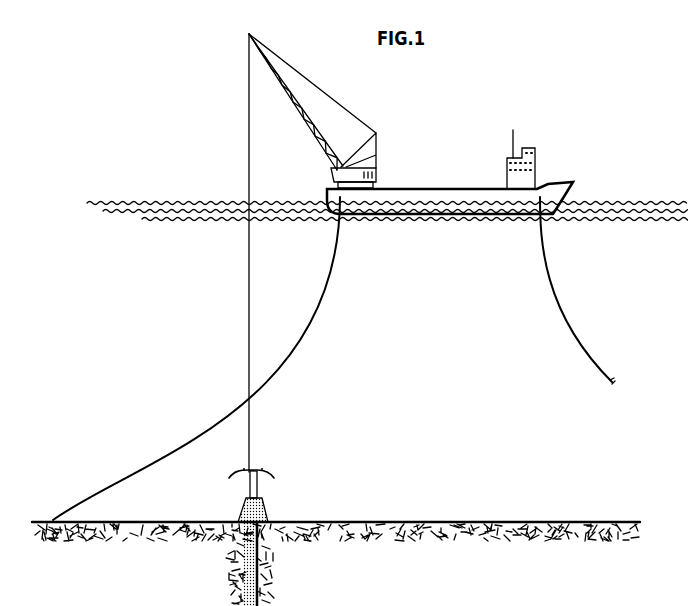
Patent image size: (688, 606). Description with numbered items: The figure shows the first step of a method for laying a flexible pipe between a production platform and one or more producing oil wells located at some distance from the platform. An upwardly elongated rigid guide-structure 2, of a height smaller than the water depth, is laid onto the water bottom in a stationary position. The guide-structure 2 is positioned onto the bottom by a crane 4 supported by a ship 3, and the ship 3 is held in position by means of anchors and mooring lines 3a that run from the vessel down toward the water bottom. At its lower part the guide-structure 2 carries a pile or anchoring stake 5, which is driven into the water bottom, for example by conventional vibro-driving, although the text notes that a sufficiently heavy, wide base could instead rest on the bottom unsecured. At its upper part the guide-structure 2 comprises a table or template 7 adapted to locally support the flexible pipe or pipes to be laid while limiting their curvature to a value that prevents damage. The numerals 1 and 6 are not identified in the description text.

The sea bed 1 is at (572, 527).
The rigid guide-structure 2 is at (255, 488).
The ship 3 is at (440, 189).
The mooring line 3a is at (325, 298).
The crane 4 is at (295, 92).
The pile or anchoring stake 5 is at (265, 577).
The anchor head 6 is at (267, 508).
The table or template 7 is at (268, 472).